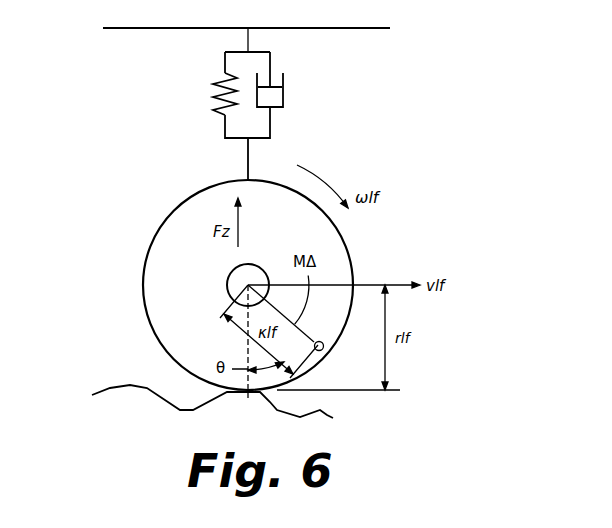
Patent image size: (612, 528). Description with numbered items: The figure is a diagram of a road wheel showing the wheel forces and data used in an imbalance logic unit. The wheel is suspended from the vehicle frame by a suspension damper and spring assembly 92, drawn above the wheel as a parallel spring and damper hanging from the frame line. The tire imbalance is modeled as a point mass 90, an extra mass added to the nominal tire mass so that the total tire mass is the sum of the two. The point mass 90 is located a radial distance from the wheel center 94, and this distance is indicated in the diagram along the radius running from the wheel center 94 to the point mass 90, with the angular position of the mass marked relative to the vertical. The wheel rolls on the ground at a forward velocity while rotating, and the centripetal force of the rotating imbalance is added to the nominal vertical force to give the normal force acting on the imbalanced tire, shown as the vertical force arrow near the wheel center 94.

The point mass 90 is at (325, 343).
The suspension damper and spring assembly 92 is at (282, 127).
The wheel center 94 is at (240, 273).